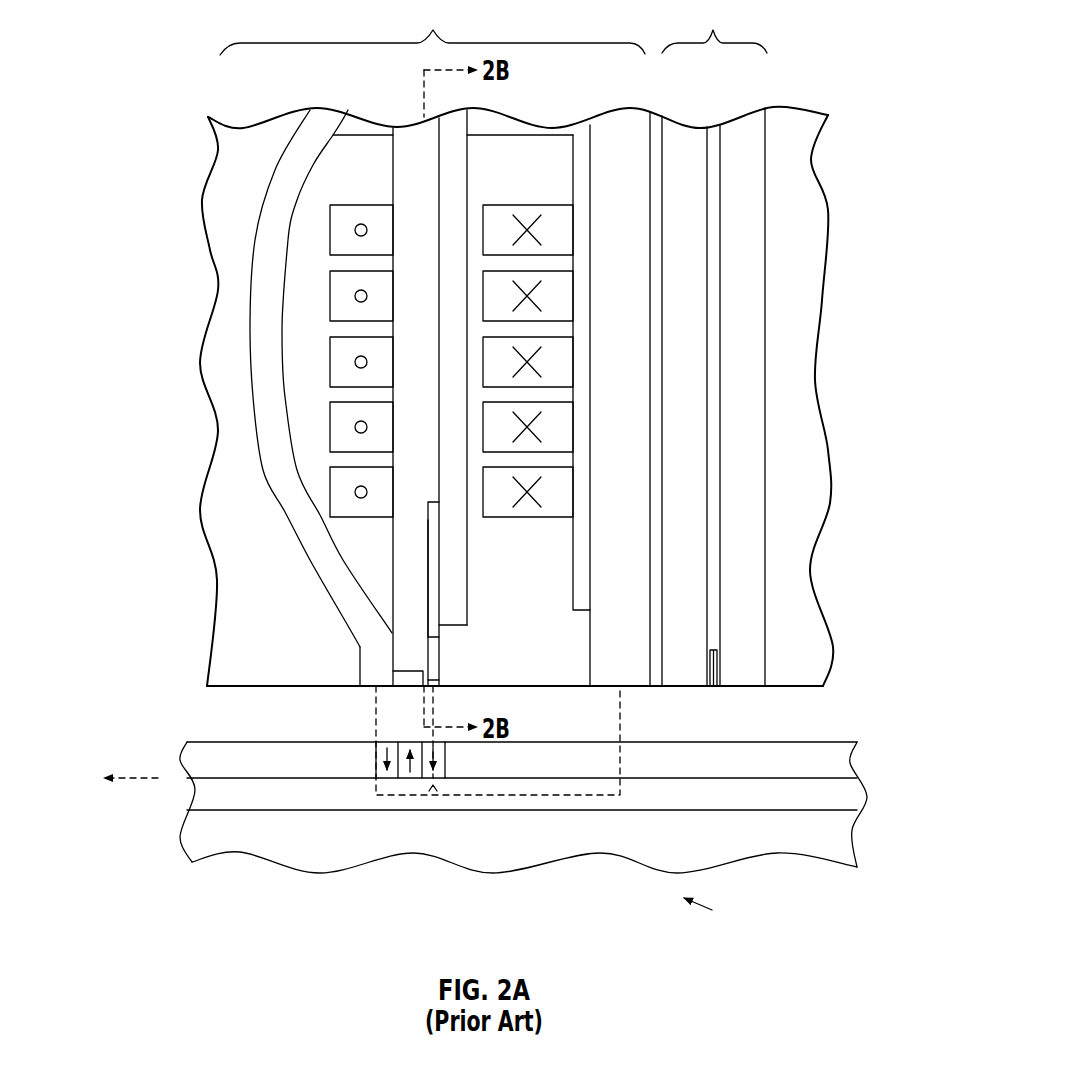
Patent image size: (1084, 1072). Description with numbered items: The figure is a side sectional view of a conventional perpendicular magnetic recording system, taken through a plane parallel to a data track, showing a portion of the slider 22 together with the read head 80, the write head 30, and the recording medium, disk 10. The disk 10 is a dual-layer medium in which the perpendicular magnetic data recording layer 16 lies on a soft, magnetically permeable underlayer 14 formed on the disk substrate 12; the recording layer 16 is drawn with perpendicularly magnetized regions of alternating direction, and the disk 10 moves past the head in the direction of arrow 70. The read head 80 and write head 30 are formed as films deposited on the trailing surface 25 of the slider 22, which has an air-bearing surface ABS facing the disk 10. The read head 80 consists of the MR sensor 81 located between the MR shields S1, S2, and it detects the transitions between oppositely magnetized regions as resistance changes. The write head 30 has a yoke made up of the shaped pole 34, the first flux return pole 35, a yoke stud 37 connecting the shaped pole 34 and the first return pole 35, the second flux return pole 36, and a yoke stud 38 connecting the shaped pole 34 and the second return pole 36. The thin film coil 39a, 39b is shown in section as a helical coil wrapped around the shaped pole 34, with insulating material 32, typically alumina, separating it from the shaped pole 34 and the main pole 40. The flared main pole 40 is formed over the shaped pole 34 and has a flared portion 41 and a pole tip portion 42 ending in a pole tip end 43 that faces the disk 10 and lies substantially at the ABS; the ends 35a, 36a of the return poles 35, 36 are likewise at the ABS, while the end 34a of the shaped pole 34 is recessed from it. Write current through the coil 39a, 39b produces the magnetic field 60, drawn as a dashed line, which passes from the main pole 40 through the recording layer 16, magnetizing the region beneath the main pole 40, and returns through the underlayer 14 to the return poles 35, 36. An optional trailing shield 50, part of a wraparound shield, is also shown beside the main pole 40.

The disk 10 is at (713, 913).
The disk substrate 12 is at (200, 833).
The soft underlayer 14 is at (198, 790).
The perpendicular magnetic data recording layer 16 is at (257, 750).
The slider 22 is at (825, 192).
The trailing surface 25 is at (762, 132).
The write head 30 is at (432, 28).
The insulating material 32 is at (553, 677).
The shaped pole 34 is at (455, 297).
The end of shaped pole 34a is at (455, 627).
The first flux return pole 35 is at (598, 657).
The end of first return pole 35a is at (630, 686).
The second flux return pole 36 is at (337, 598).
The end of second return pole 36a is at (370, 690).
The yoke stud 37 is at (605, 117).
The yoke stud 38 is at (413, 140).
The thin film coil 39a is at (545, 203).
The thin film coil 39b is at (365, 205).
The flared main pole 40 is at (437, 502).
The flared portion 41 is at (428, 567).
The pole tip portion 42 is at (438, 678).
The pole tip end 43 is at (437, 683).
The trailing shield 50 is at (407, 670).
The magnetic field 60 is at (408, 796).
The arrow 70 is at (133, 777).
The read head 80 is at (714, 27).
The MR sensor 81 is at (720, 657).
The MR shield S1 is at (758, 600).
The MR shield S2 is at (693, 686).
The air-bearing surface ABS is at (783, 690).